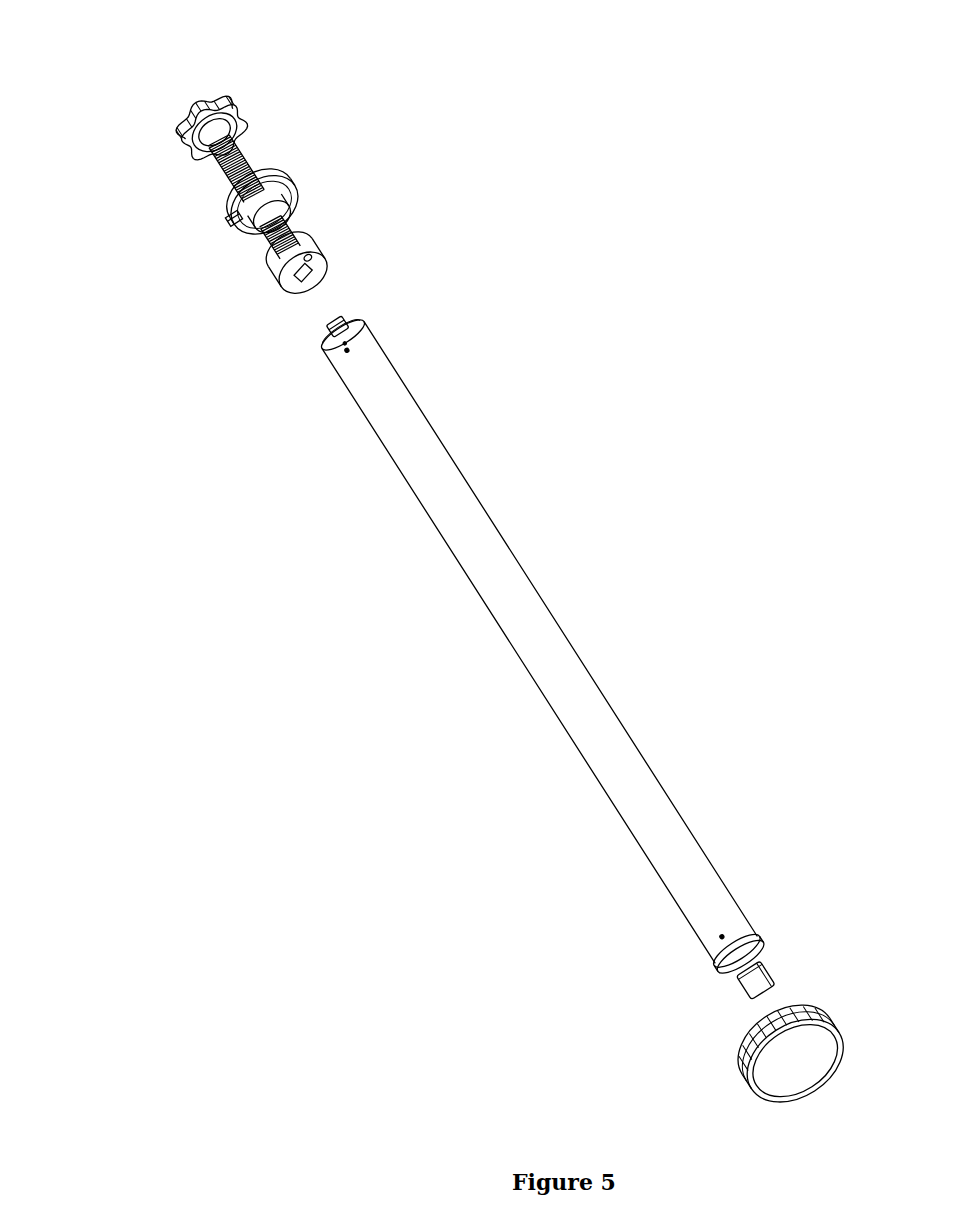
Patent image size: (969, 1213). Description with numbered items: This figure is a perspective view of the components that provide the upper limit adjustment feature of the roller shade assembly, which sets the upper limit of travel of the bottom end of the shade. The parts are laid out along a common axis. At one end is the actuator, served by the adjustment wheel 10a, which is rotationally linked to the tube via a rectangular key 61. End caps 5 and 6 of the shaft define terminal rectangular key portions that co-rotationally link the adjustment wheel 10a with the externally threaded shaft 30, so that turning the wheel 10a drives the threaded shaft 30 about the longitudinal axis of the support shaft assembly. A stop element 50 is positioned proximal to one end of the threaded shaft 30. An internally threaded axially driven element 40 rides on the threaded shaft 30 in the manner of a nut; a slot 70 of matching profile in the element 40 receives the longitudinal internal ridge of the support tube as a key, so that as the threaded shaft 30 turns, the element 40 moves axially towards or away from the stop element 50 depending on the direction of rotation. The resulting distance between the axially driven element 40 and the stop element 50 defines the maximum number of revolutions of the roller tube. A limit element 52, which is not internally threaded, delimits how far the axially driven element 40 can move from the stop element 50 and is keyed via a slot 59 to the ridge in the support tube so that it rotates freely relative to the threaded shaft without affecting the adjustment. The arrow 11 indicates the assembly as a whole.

The end cap 5 is at (323, 350).
The end cap 6 is at (733, 973).
The adjustment wheel 10a is at (707, 1058).
The support device 11 is at (229, 86).
The externally threaded shaft 30 is at (265, 152).
The axially driven element 40 is at (228, 238).
The stop element 50 is at (330, 232).
The limit element 52 is at (173, 152).
The slot 59 is at (183, 128).
The rectangular key 61 is at (777, 968).
The slot 70 is at (220, 207).